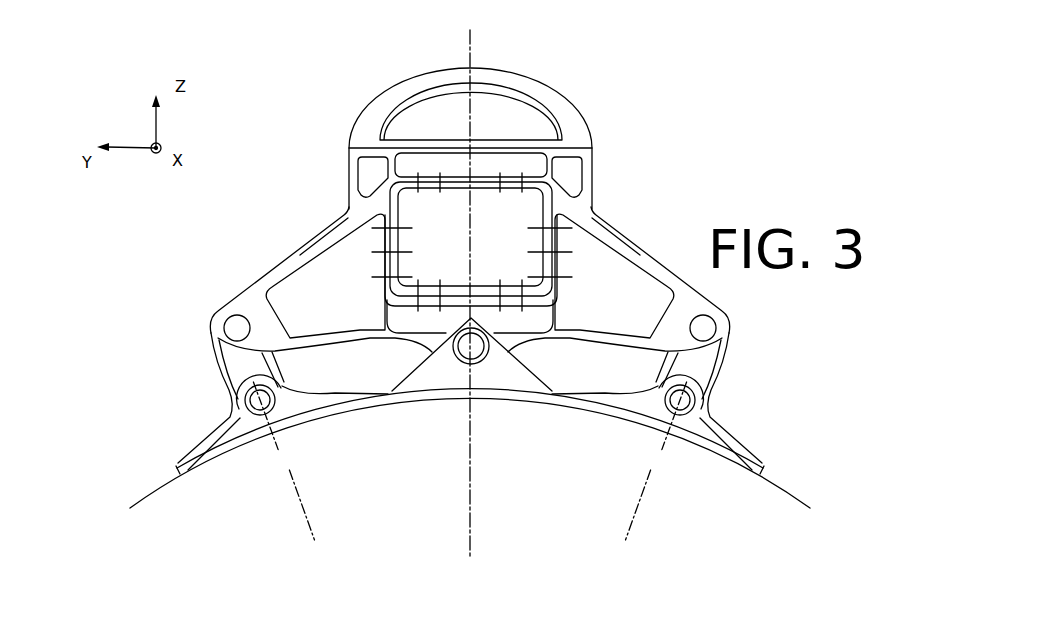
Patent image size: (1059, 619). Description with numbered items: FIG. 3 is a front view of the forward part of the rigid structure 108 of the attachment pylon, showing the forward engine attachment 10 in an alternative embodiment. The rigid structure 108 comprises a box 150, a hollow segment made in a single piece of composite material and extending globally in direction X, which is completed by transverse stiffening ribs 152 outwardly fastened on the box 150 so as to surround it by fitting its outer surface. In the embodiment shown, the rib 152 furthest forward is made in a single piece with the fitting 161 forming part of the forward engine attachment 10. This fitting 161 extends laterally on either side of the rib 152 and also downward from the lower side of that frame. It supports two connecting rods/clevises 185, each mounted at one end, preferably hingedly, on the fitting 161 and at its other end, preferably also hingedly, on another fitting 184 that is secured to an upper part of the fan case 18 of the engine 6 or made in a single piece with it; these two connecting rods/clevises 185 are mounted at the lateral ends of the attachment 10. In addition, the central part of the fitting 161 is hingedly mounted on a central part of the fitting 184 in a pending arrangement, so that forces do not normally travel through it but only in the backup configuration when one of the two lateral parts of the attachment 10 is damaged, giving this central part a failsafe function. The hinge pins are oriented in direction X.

The rigid structure 108 is at (600, 37).
The transverse stiffening rib 152 is at (590, 97).
The box 150 is at (512, 218).
The fitting 161 is at (301, 270).
The connecting rod/clevis 185 is at (212, 363).
The fitting 184 is at (420, 382).
The forward engine attachment 10 is at (749, 417).
The fan case 18 is at (167, 502).
The engine 6 is at (100, 480).